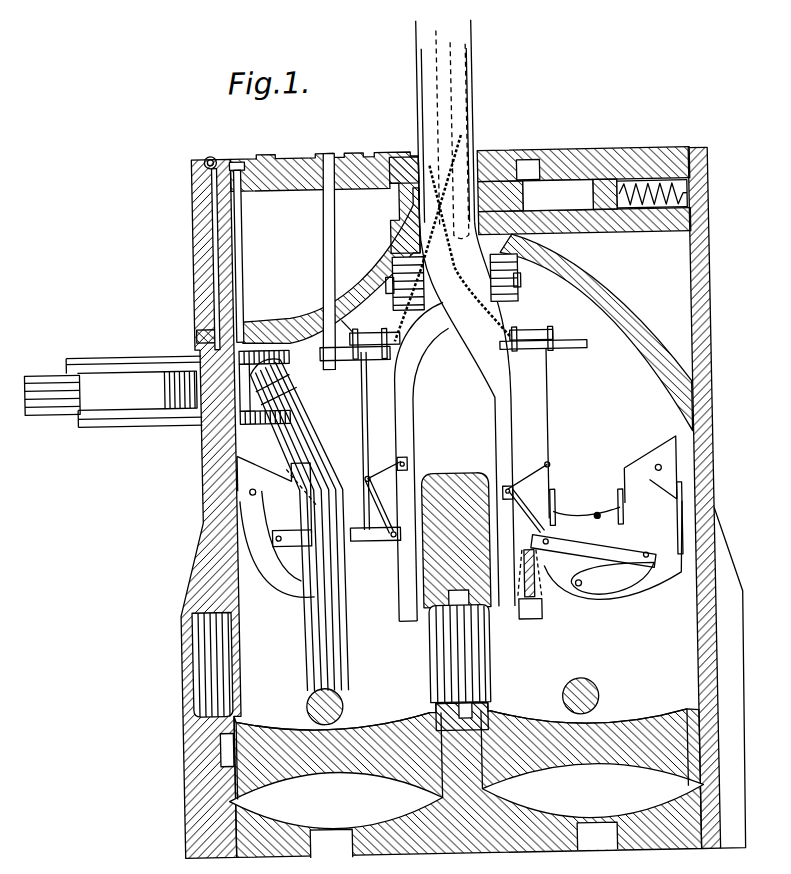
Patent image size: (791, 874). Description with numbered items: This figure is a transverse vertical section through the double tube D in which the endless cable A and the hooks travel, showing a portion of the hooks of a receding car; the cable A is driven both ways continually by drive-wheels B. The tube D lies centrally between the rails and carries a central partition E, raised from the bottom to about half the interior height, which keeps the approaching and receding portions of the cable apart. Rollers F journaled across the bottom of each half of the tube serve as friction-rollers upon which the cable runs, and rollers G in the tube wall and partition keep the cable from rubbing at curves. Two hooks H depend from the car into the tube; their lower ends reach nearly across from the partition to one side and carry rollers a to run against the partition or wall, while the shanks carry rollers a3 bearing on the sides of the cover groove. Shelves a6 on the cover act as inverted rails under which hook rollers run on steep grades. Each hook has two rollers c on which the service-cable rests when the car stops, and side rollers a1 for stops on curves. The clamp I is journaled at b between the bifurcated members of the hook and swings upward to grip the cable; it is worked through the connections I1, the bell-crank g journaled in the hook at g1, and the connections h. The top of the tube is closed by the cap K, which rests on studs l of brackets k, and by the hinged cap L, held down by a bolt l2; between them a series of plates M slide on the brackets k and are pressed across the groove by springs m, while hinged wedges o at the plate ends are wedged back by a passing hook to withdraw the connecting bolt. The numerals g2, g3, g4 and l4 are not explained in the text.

The endless cable A is at (304, 633).
The drive-wheels B is at (157, 389).
The tube D is at (459, 504).
The central partition E is at (457, 635).
The rollers F is at (462, 753).
The rollers G is at (341, 661).
The hooks H is at (457, 314).
The clamp I is at (454, 309).
The connections / operating-bar I1 is at (427, 326).
The cap K is at (583, 179).
The cap L is at (324, 172).
The plates M is at (470, 200).
The rollers a is at (178, 535).
The side rollers a1 is at (587, 502).
The rollers a3 is at (424, 122).
The shelves a6 is at (400, 245).
The journal of clamp b is at (435, 586).
The rollers c is at (586, 517).
The bell-crank g is at (453, 424).
The journal of bell-crank g1 is at (322, 350).
The chain g2 is at (435, 238).
The pin g3 is at (351, 321).
The bolt g4 is at (452, 334).
The connections h is at (503, 547).
The brackets k is at (584, 221).
The studs l is at (431, 260).
The bolt l2 is at (238, 237).
The tube l4 is at (209, 241).
The springs m is at (652, 192).
The wedges o is at (422, 160).